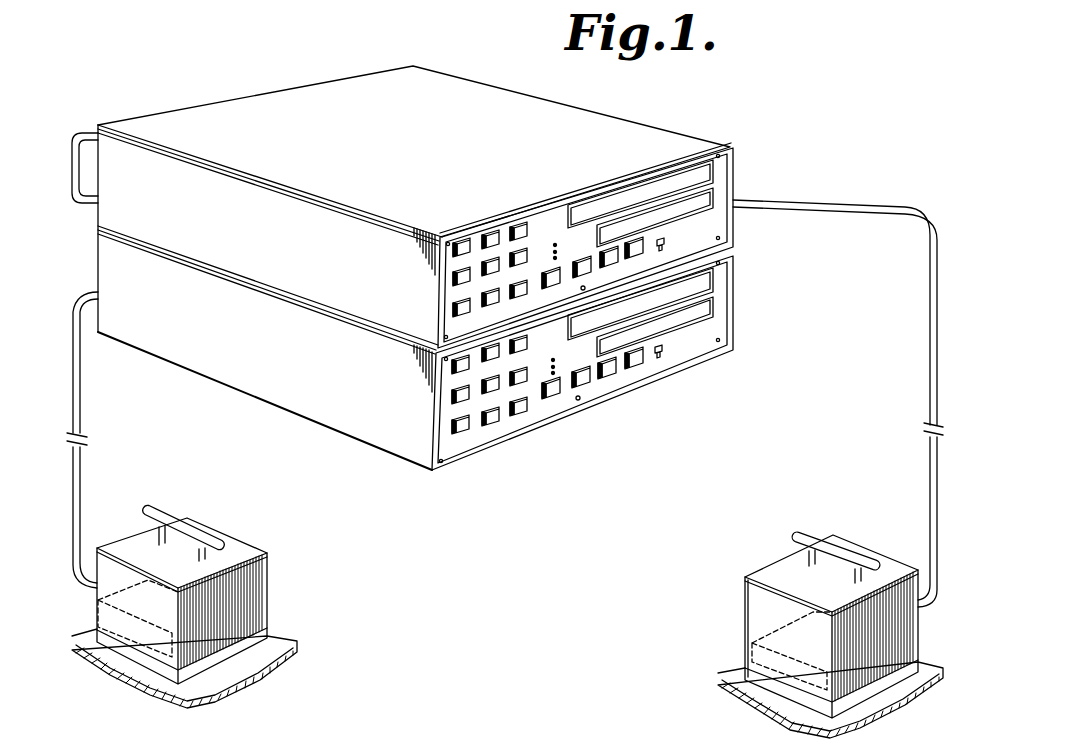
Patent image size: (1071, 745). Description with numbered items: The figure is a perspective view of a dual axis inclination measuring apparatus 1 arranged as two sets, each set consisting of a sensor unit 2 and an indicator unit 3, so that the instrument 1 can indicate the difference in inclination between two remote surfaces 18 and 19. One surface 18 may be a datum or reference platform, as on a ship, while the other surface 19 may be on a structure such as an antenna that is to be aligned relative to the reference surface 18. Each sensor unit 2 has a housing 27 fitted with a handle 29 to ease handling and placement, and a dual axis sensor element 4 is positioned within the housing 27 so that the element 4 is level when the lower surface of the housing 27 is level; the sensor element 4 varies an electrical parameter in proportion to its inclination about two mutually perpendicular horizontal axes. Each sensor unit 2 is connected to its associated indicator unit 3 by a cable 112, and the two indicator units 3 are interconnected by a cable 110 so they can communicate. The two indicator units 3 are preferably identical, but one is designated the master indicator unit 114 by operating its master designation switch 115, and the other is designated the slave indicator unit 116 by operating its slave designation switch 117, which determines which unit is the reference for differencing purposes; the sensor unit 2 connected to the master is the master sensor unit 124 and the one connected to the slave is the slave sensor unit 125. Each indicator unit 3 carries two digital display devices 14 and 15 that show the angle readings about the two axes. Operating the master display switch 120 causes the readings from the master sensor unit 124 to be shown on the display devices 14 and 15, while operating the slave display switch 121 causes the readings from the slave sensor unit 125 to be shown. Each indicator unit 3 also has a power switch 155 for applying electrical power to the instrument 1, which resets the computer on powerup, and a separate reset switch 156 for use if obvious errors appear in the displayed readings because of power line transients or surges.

The dual axis inclination measuring apparatus 1 is at (812, 106).
The sensor unit 2 is at (493, 594).
The indicator unit 3 is at (432, 277).
The sensor element 4 is at (108, 618).
The digital display device 14 is at (653, 190).
The digital display device 15 is at (722, 197).
The reference surface 18 is at (275, 648).
The surface on a structure 19 is at (768, 700).
The housing 27 is at (507, 618).
The handle 29 is at (165, 500).
The cable 110 is at (78, 133).
The cable 112 is at (82, 468).
The master indicator unit 114 is at (345, 430).
The master designation switch 115 is at (470, 243).
The slave indicator unit 116 is at (497, 100).
The slave designation switch 117 is at (497, 232).
The master display switch 120 is at (458, 440).
The slave display switch 121 is at (492, 430).
The master sensor unit 124 is at (265, 576).
The slave sensor unit 125 is at (745, 598).
The power switch 155 is at (652, 365).
The reset switch 156 is at (530, 226).